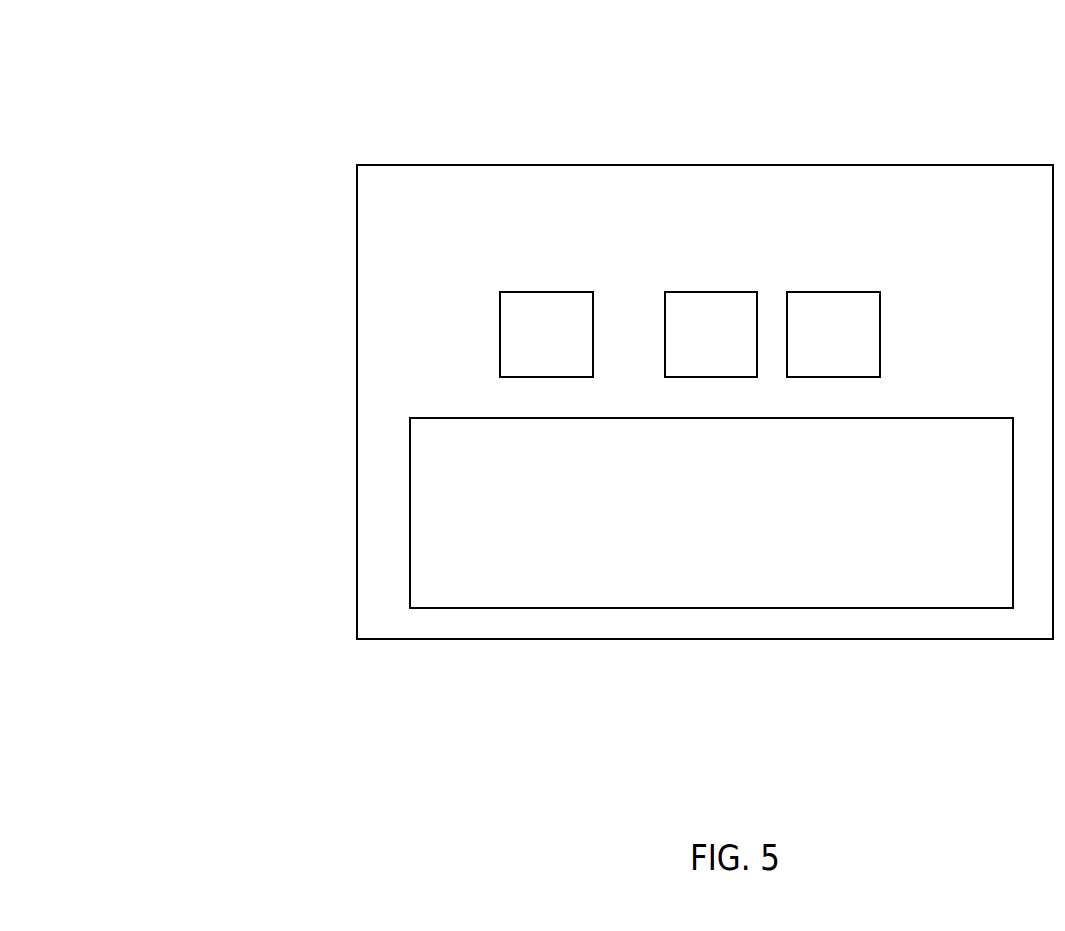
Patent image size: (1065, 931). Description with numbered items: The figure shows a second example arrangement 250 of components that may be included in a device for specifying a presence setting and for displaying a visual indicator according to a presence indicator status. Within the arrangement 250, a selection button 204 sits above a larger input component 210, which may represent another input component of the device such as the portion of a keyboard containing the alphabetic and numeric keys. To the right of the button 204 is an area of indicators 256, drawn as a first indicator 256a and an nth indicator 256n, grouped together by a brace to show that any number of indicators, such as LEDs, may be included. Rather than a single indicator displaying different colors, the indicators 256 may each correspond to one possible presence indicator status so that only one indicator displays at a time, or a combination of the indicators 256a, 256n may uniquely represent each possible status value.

The second example arrangement 250 is at (185, 35).
The selection button 204 is at (522, 312).
The input component 210 is at (675, 525).
The indicators 256 is at (891, 292).
The indicator 256a is at (735, 350).
The indicator 256n is at (858, 350).